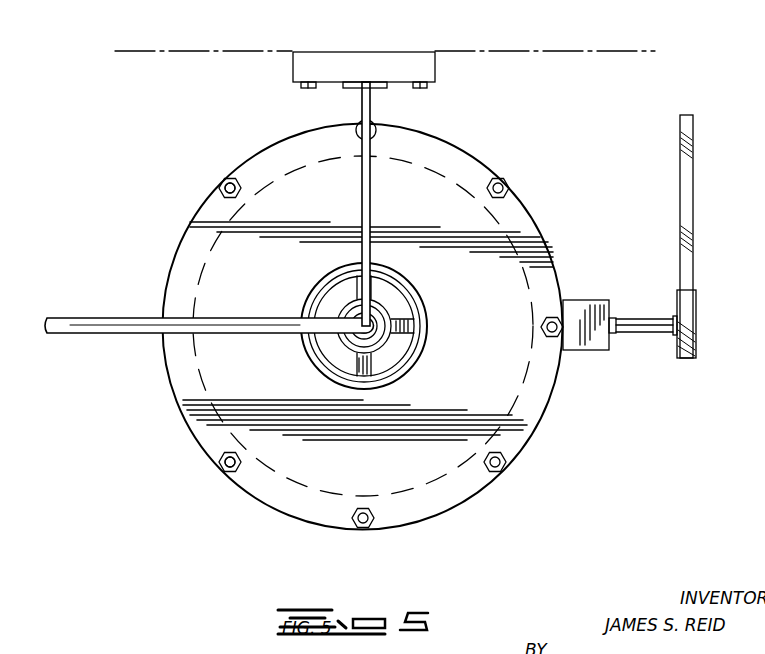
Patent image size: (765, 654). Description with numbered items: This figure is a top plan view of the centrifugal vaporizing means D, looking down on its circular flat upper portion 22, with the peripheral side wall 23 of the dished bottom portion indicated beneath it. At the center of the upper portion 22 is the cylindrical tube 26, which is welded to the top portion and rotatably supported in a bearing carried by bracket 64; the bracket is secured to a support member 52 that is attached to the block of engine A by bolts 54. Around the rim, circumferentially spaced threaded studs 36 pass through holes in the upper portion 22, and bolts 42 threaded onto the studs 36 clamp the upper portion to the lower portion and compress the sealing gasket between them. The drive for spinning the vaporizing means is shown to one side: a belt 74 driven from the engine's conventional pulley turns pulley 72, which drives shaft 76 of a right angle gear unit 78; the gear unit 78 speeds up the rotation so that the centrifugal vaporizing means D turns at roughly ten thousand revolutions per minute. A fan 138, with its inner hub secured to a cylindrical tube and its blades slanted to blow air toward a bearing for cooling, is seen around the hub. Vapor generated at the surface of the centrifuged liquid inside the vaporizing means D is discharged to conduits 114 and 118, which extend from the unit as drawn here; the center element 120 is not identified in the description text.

The engine A is at (628, 42).
The circular flat upper portion 22 is at (468, 167).
The peripheral side wall 23 is at (527, 382).
The cylindrical tube 26 is at (342, 348).
The threaded studs 36 is at (232, 177).
The bolts 42 is at (220, 188).
The support member 52 is at (428, 70).
The bolts 54 is at (303, 87).
The bracket 64 is at (430, 327).
The pulley 72 is at (695, 357).
The belt 74 is at (690, 200).
The shaft 76 is at (625, 322).
The right angle gear unit 78 is at (583, 303).
The conduit 114 is at (372, 220).
The conduit 118 is at (203, 317).
The hub center 120 is at (372, 330).
The fan 138 is at (412, 292).
The centrifugal vaporizing means D is at (540, 202).